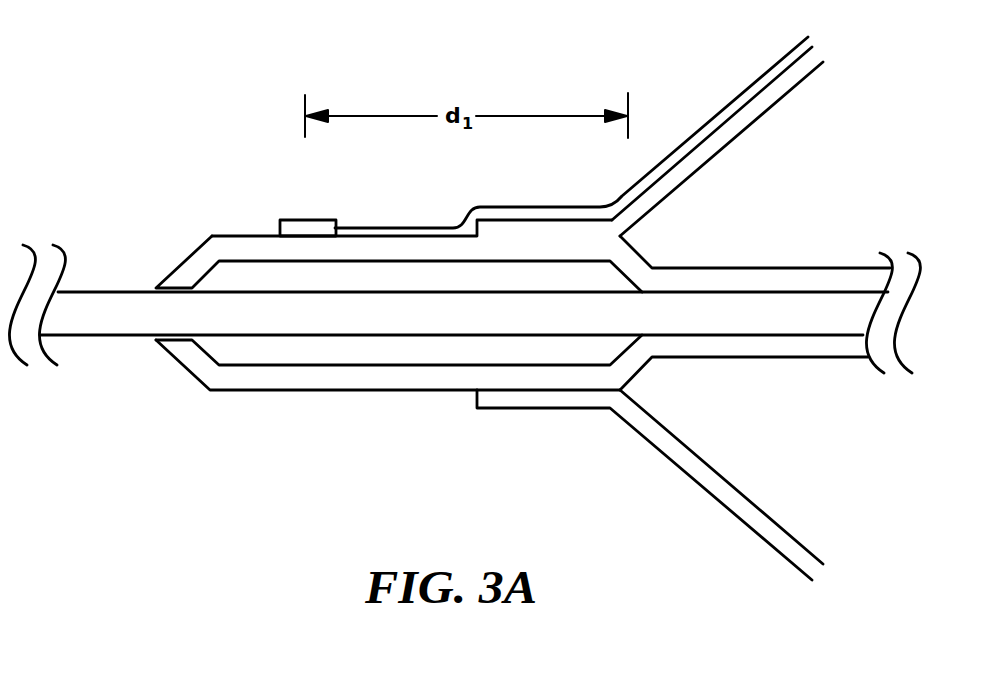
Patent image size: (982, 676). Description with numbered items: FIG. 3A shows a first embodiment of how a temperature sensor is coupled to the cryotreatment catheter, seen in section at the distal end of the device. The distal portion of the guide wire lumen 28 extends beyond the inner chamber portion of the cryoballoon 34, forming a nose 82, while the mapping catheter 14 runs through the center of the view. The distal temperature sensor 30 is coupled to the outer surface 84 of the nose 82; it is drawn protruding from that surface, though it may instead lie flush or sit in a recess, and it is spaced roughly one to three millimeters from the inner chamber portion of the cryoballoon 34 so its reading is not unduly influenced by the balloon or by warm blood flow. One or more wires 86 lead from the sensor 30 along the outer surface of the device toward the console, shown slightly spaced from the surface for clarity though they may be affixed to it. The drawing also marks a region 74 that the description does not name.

The mapping catheter 14 is at (403, 322).
The guide wire lumen 28 is at (837, 358).
The distal temperature sensor 30 is at (300, 219).
The cryoballoon 34 is at (670, 460).
The lumen 74 is at (759, 441).
The nose 82 is at (166, 381).
The outer surface 84 is at (237, 236).
The wires 86 is at (544, 207).